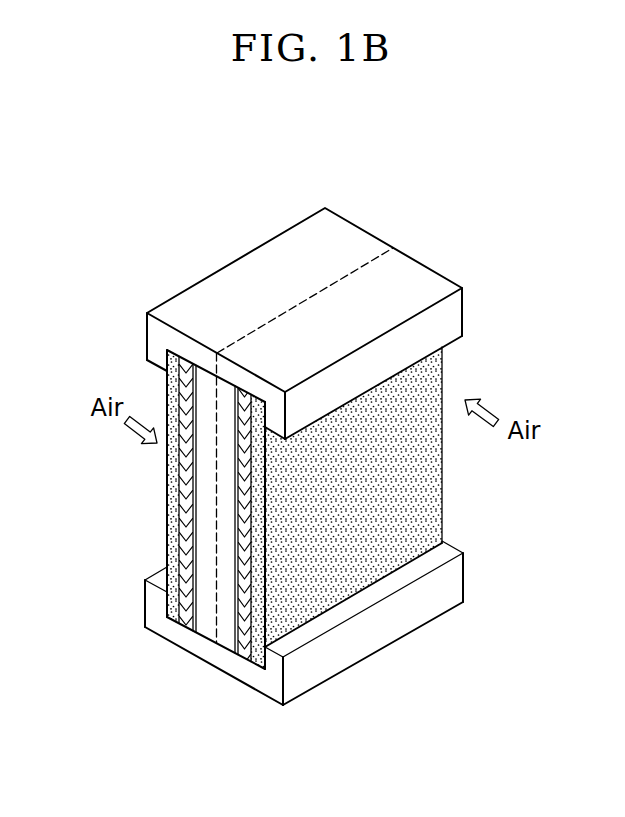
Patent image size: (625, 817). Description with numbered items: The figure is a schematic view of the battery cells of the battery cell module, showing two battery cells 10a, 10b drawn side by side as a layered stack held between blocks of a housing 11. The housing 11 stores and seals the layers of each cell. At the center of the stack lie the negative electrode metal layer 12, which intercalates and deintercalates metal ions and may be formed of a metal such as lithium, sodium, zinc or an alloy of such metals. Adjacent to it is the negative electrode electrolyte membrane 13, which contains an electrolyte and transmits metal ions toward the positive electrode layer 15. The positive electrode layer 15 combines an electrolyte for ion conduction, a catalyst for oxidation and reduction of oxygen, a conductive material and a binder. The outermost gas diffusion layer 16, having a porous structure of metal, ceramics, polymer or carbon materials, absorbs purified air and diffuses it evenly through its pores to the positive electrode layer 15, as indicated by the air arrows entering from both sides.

The battery cell 10a is at (439, 258).
The battery cell 10b is at (364, 216).
The housing 11 is at (198, 313).
The negative electrode metal layer 12 is at (207, 629).
The negative electrode electrolyte membrane 13 is at (195, 623).
The positive electrode layer 15 is at (186, 613).
The gas diffusion layer 16 is at (173, 602).